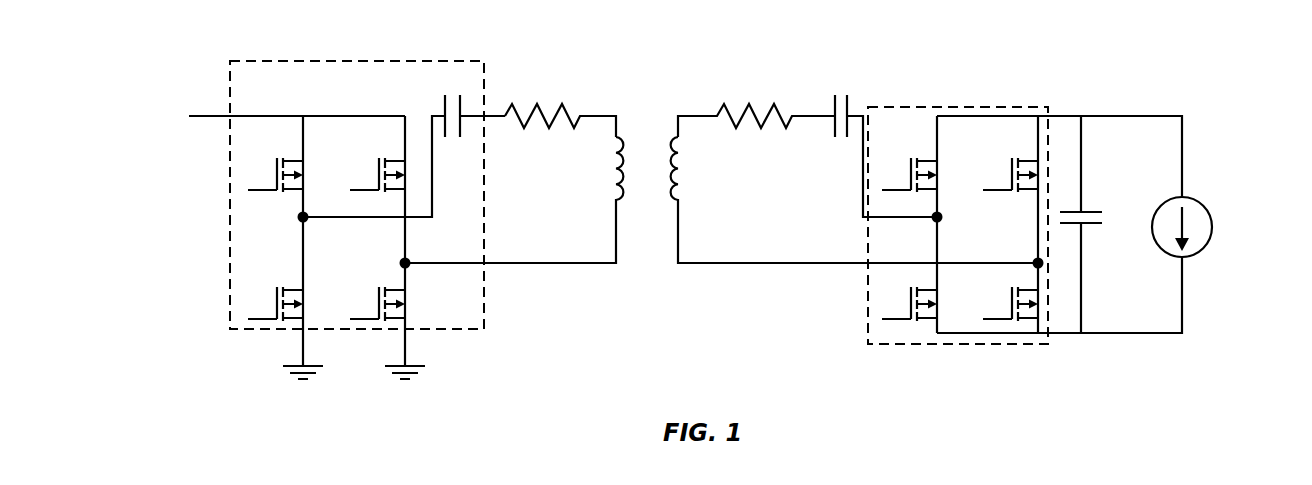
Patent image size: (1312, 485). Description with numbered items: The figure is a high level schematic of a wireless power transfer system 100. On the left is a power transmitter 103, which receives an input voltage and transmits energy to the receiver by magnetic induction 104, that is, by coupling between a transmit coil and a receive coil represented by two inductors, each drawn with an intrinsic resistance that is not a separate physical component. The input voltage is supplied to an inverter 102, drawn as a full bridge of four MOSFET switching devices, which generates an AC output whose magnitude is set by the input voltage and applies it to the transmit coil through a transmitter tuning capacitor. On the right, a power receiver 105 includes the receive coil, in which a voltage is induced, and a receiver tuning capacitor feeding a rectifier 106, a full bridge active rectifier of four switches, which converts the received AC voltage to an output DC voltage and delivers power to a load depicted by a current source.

The wireless power transfer system 100 is at (1072, 57).
The inverter 102 is at (351, 60).
The power transmitter 103 is at (194, 164).
The magnetic induction 104 is at (645, 288).
The power receiver 105 is at (818, 288).
The rectifier 106 is at (963, 106).